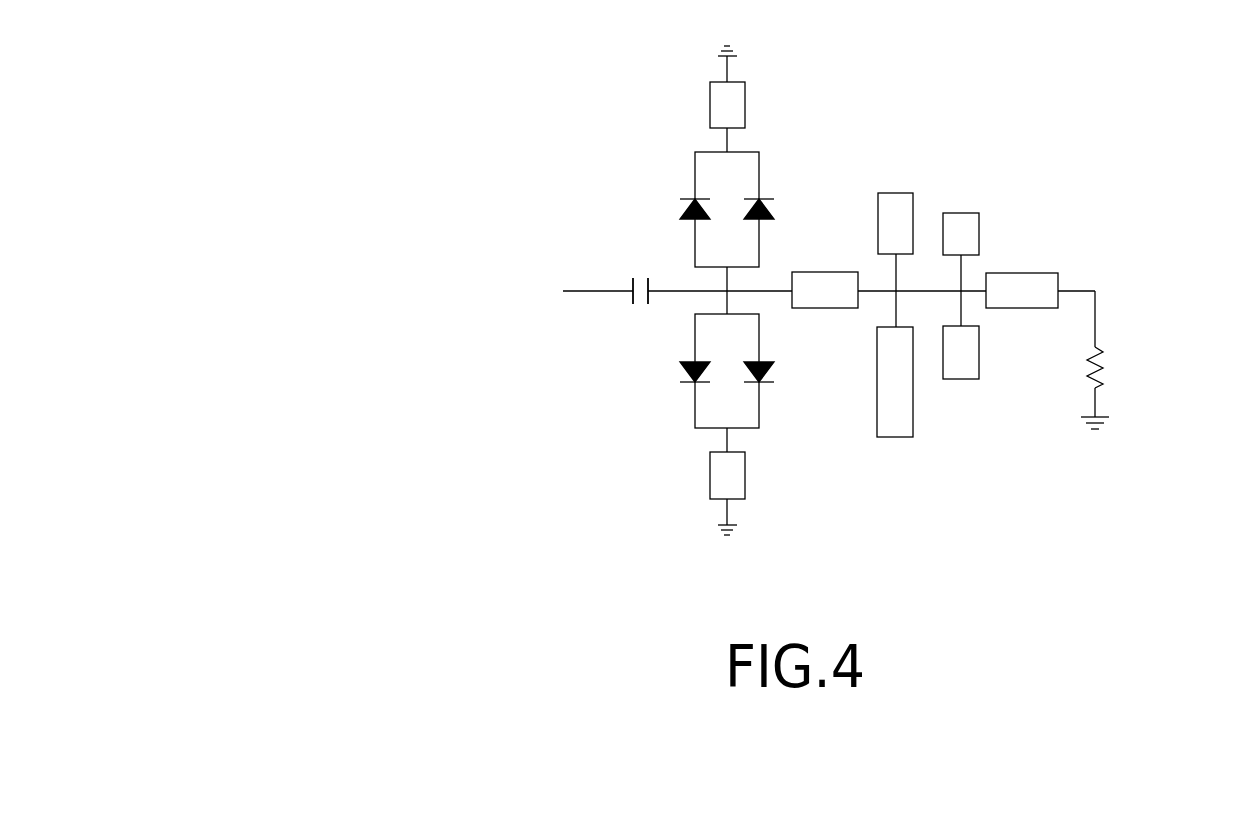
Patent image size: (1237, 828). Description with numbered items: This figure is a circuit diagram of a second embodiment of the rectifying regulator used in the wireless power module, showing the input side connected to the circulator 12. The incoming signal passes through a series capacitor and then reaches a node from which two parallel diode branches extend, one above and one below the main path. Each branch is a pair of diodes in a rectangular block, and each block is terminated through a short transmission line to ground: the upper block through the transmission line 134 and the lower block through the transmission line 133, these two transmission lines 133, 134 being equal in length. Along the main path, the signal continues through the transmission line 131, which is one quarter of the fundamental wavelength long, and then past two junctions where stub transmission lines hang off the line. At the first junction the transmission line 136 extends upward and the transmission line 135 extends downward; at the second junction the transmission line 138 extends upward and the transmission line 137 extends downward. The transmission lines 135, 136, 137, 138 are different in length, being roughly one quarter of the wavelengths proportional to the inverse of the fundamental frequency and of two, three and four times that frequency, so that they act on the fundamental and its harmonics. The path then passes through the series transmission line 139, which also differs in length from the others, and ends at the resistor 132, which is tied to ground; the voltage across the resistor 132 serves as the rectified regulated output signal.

The circulator 12 is at (409, 289).
The transmission line 131 is at (822, 272).
The resistor 132 is at (1104, 357).
The transmission line 133 is at (710, 475).
The transmission line 134 is at (710, 103).
The transmission line 135 is at (895, 437).
The transmission line 136 is at (893, 192).
The transmission line 137 is at (960, 380).
The transmission line 138 is at (960, 212).
The transmission line 139 is at (1022, 272).